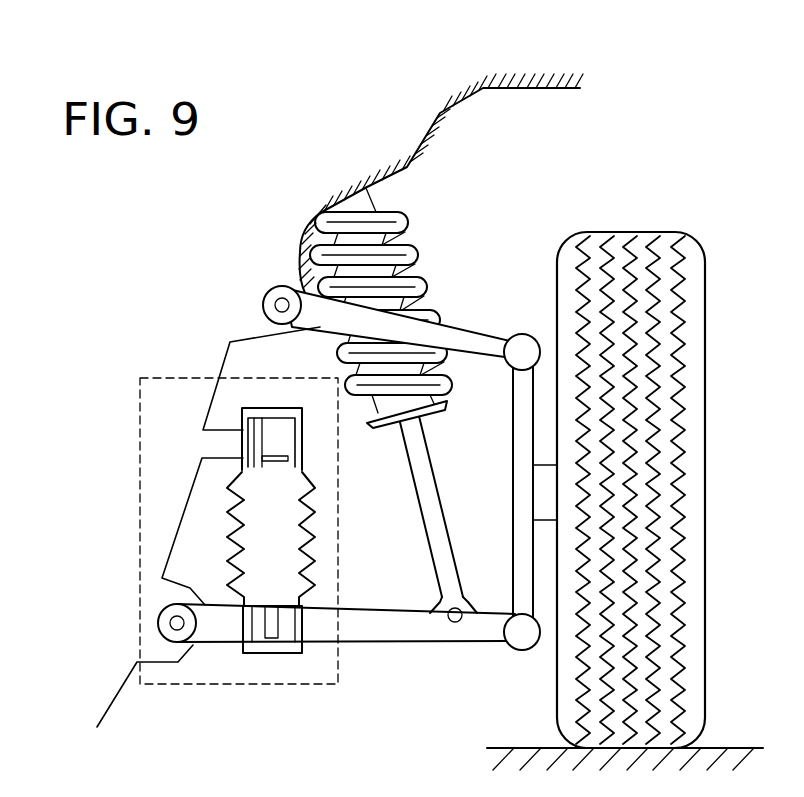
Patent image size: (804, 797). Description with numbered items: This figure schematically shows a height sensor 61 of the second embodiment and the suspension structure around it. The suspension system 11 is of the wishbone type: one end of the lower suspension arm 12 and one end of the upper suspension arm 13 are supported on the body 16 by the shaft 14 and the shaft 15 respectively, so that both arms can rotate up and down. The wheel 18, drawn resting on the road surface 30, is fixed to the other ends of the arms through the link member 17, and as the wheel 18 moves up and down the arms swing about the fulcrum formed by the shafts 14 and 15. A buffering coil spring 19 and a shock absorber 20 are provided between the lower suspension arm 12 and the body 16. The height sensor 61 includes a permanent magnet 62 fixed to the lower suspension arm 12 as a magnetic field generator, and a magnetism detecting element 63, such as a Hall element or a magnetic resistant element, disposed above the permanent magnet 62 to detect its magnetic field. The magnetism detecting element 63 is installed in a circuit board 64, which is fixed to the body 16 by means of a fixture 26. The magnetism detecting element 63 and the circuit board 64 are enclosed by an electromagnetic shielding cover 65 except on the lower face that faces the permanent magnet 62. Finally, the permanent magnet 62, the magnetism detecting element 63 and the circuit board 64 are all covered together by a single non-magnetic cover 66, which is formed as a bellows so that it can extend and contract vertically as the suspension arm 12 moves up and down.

The suspension system 11 is at (450, 645).
The lower suspension arm 12 is at (369, 641).
The upper suspension arm 13 is at (465, 327).
The shaft 14 is at (170, 623).
The shaft 15 is at (281, 304).
The body 16 is at (393, 95).
The link member 17 is at (513, 436).
The wheel 18 is at (598, 232).
The buffering coil spring 19 is at (420, 250).
The shock absorber 20 is at (418, 508).
The fixture 26 is at (223, 443).
The road surface 30 is at (727, 748).
The height sensor 61 is at (203, 684).
The permanent magnet 62 is at (302, 627).
The magnetism detecting element 63 is at (270, 468).
The circuit board 64 is at (260, 440).
The electromagnetic shielding cover 65 is at (297, 446).
The non-magnetic cover 66 is at (228, 510).